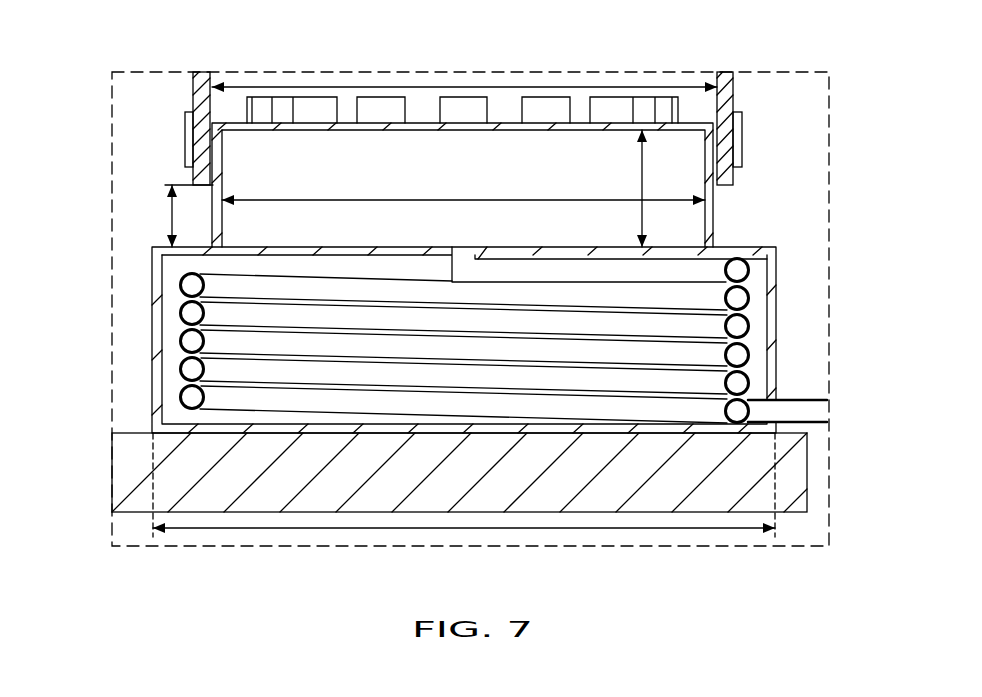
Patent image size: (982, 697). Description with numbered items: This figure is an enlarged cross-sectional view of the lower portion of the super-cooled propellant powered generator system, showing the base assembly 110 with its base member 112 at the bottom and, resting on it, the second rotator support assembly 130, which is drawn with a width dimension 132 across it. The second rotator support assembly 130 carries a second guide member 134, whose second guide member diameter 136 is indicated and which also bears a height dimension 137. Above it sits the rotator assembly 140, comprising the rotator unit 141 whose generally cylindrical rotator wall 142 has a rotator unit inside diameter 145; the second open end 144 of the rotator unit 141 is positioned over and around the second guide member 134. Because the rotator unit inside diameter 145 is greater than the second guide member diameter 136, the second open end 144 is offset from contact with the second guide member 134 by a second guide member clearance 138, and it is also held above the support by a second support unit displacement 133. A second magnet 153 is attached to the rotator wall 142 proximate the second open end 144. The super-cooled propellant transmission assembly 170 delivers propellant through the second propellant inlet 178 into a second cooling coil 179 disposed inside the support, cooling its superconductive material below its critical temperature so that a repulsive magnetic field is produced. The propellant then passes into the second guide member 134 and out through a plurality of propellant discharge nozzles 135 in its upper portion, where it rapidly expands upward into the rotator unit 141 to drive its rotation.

The base assembly 110 is at (693, 558).
The base member 112 is at (577, 502).
The second rotator support assembly 130 is at (806, 315).
The housing width 132 is at (317, 530).
The second support unit displacement 133 is at (171, 218).
The second guide member 134 is at (690, 158).
The propellant discharge nozzles 135 is at (530, 96).
The second guide member diameter 136 is at (414, 200).
The inner height 137 is at (642, 150).
The second guide member clearance 138 is at (211, 160).
The rotator assembly 140 is at (750, 92).
The rotator unit 141 is at (193, 101).
The rotator wall 142 is at (202, 73).
The second open end 144 is at (191, 184).
The rotator unit inside diameter 145 is at (335, 85).
The second magnet 153 is at (742, 133).
The super-cooled propellant transmission assembly 170 is at (96, 270).
The second propellant inlet 178 is at (818, 413).
The second cooling coil 179 is at (216, 341).